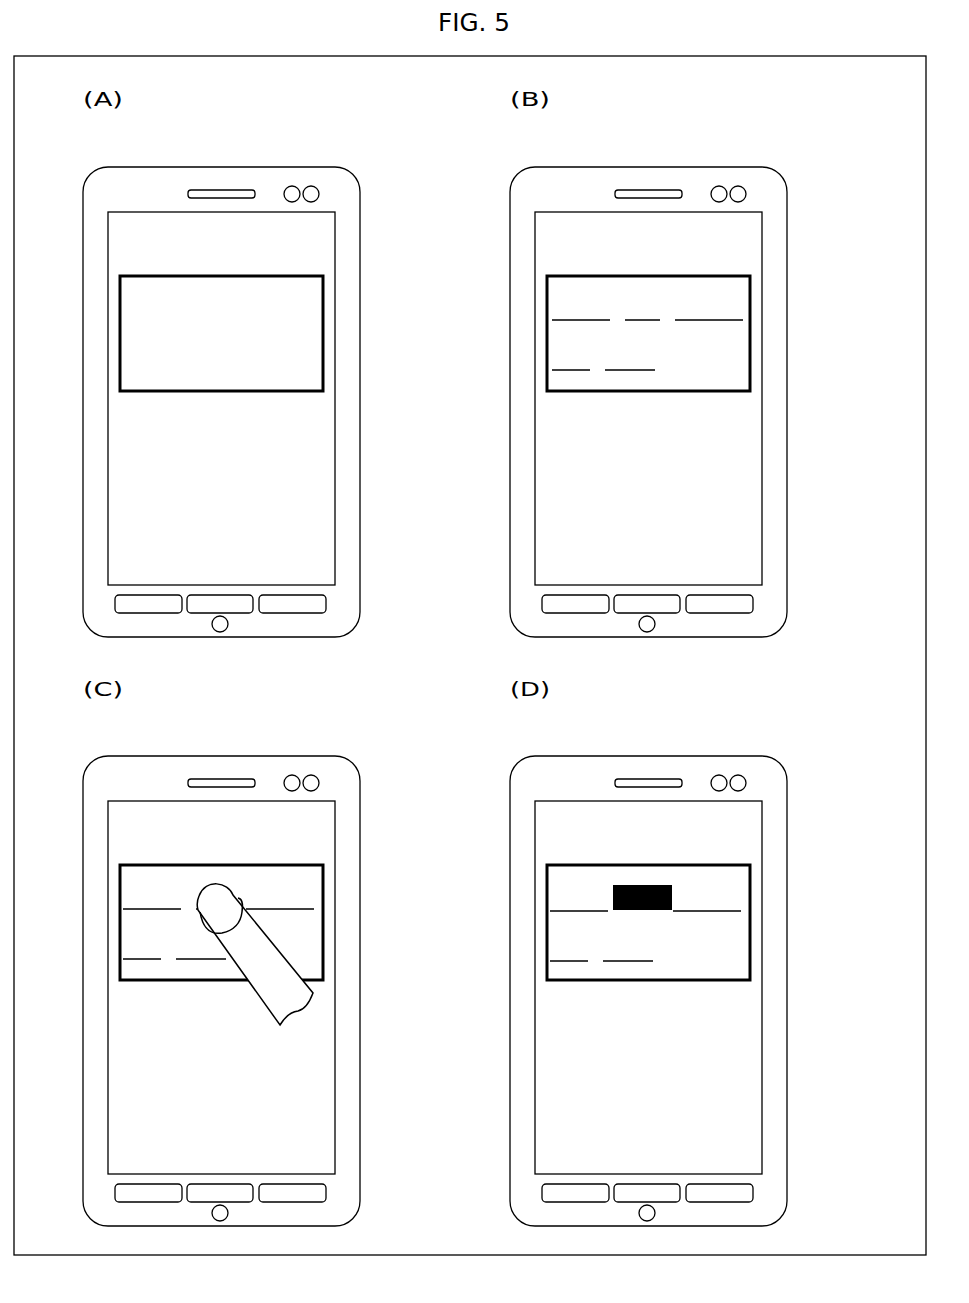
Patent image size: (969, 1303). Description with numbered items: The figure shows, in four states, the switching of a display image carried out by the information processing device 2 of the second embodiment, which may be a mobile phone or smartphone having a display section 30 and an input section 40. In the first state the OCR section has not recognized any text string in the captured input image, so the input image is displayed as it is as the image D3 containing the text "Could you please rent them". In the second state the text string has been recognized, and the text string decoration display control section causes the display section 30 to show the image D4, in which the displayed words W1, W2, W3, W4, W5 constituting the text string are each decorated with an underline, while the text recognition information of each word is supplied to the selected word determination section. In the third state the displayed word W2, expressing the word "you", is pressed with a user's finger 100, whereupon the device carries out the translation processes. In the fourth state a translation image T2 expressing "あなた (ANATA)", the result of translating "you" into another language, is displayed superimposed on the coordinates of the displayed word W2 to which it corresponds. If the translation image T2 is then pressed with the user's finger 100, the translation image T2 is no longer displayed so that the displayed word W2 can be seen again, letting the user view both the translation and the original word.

The information processing device 2 is at (435, 670).
The display section 30 is at (489, 693).
The input section 40 is at (489, 693).
The image D3 is at (270, 333).
The image D4 is at (483, 628).
The displayed word W1 is at (366, 569).
The displayed word W2 is at (428, 568).
The displayed word W3 is at (494, 569).
The displayed word W4 is at (356, 690).
The displayed word W5 is at (415, 690).
The translation image T2 is at (642, 862).
The user's finger 100 is at (270, 962).